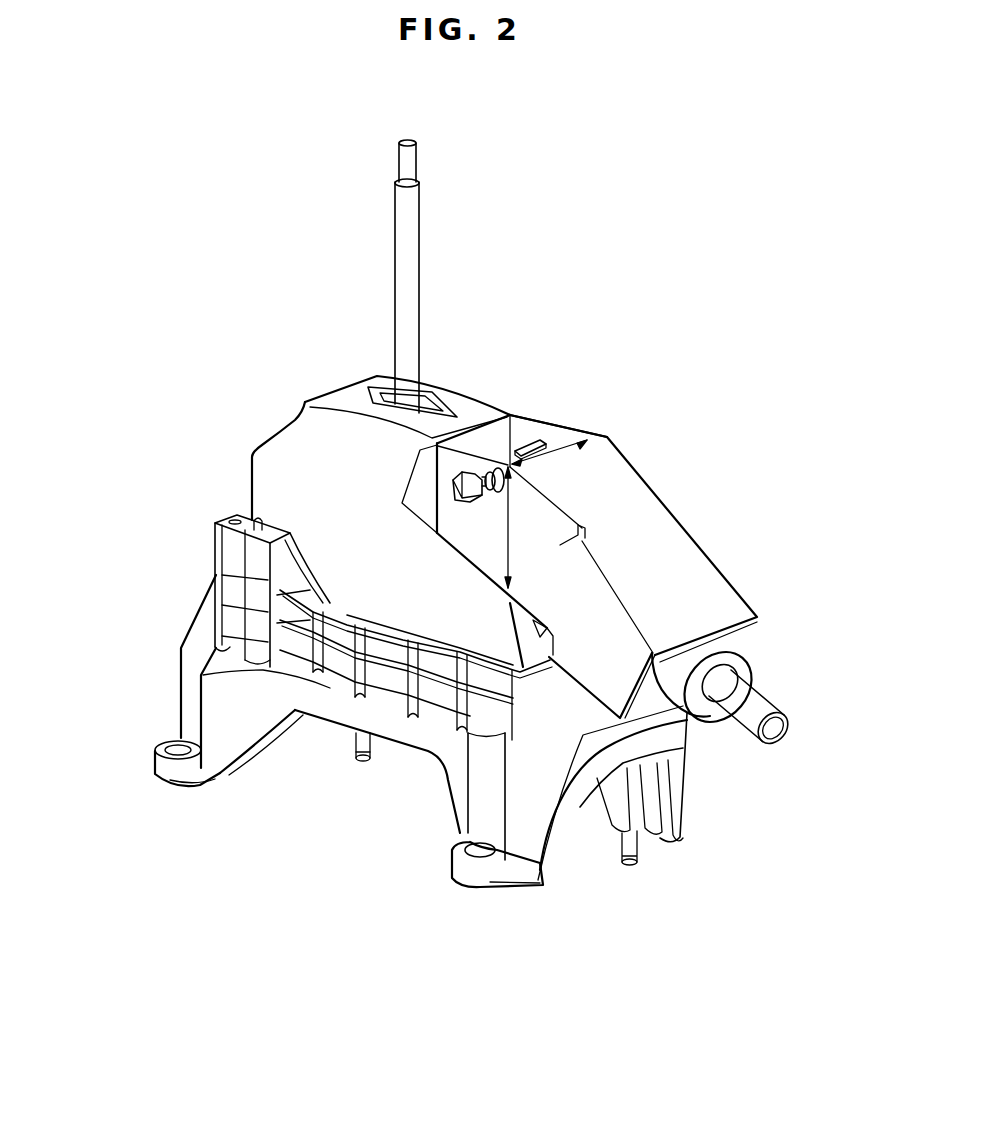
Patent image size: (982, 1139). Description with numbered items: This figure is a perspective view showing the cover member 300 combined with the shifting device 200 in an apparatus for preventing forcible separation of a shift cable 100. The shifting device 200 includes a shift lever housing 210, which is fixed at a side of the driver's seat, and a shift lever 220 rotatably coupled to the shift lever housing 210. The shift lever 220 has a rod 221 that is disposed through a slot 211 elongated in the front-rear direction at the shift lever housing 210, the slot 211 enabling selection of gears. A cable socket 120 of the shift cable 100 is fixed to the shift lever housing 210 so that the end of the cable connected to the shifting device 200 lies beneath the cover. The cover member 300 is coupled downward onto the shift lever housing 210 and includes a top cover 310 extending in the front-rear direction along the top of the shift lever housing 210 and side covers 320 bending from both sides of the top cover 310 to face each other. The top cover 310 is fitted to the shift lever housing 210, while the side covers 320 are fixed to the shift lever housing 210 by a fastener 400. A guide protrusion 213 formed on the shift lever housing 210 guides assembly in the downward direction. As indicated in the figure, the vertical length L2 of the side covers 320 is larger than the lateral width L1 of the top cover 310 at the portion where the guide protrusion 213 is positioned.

The shift cable 100 is at (757, 702).
The cable socket 120 is at (703, 648).
The shifting device 200 is at (172, 703).
The shift lever housing 210 is at (328, 715).
The slot 211 is at (378, 398).
The guide protrusion 213 is at (543, 442).
The shift lever 220 is at (347, 276).
The rod 221 is at (405, 245).
The cover member 300 is at (643, 645).
The top cover 310 is at (618, 478).
The side cover 320 is at (737, 632).
The fastener 400 is at (462, 487).
The lateral width of the top cover L1 is at (563, 438).
The vertical length of the side covers L2 is at (508, 543).